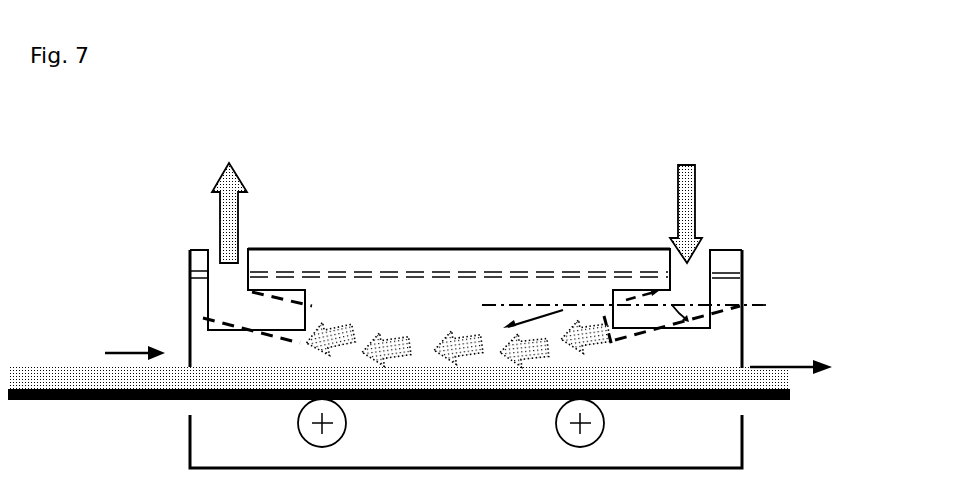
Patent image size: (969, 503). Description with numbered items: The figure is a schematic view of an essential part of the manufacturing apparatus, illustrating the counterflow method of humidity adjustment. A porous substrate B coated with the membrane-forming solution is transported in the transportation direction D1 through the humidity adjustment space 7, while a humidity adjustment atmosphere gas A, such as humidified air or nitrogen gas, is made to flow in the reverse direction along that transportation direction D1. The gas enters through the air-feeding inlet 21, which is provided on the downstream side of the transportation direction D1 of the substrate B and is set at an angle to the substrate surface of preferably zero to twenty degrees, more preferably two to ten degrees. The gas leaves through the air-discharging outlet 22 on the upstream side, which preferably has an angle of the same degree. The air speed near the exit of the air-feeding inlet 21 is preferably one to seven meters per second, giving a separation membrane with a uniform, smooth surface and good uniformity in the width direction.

The humidity adjustment space 7 is at (432, 292).
The air-feeding inlet 21 is at (626, 290).
The air-discharging outlet 22 is at (300, 290).
The humidity adjustment atmosphere gas A is at (696, 207).
The porous substrate B is at (118, 402).
The transportation direction D1 is at (128, 348).